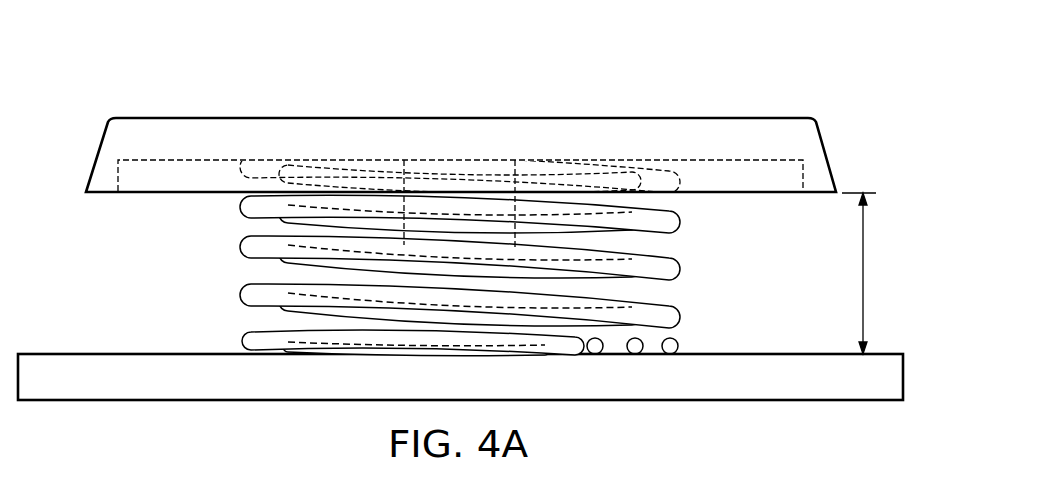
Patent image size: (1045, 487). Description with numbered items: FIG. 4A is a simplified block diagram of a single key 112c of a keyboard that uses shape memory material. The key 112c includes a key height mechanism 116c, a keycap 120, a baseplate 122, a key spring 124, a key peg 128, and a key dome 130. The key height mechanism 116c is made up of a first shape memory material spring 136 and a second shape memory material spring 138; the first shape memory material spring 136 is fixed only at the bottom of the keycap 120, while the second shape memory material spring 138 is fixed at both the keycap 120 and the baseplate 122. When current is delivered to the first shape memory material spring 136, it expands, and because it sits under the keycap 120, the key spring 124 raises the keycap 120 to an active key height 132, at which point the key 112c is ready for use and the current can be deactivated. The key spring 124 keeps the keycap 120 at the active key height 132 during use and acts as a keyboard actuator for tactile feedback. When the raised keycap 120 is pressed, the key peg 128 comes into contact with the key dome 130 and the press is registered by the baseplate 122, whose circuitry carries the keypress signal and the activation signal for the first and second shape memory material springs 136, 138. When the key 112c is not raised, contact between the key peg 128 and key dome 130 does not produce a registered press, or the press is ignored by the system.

The key 112c is at (476, 239).
The key height mechanism 116c is at (509, 293).
The keycap 120 is at (190, 118).
The baseplate 122 is at (158, 392).
The key spring 124 is at (430, 223).
The key peg 128 is at (522, 171).
The key dome 130 is at (512, 340).
The active key height 132 is at (866, 275).
The first shape memory material spring 136 is at (290, 225).
The second shape memory material spring 138 is at (682, 265).